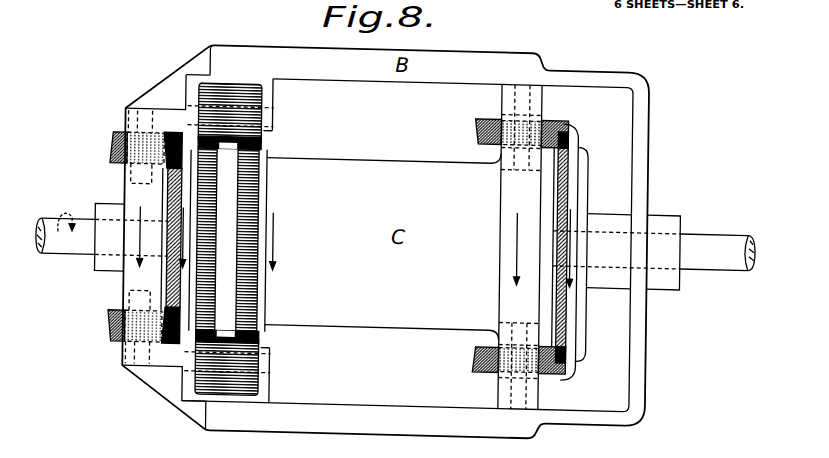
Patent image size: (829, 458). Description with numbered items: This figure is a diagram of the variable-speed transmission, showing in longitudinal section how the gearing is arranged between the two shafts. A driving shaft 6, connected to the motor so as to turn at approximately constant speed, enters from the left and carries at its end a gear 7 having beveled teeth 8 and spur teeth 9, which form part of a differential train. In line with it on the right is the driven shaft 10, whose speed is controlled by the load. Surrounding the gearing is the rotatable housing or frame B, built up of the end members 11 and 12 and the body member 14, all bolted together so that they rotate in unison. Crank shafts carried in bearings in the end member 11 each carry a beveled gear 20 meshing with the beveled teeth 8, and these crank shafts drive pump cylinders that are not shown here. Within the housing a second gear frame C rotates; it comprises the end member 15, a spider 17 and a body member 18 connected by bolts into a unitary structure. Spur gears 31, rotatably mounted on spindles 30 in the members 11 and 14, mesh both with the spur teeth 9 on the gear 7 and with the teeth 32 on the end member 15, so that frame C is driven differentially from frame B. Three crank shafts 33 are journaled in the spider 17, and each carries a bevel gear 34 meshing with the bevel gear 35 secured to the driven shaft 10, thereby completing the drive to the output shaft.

The driving shaft 6 is at (38, 243).
The gear 7 is at (185, 350).
The beveled teeth 8 is at (168, 279).
The spur teeth 9 is at (202, 148).
The driven shaft 10 is at (654, 251).
The end member 11 is at (125, 191).
The end member 12 is at (649, 146).
The body member 14 is at (372, 84).
The end member 15 is at (266, 303).
The spider 17 is at (499, 221).
The body member 18 is at (390, 330).
The beveled gear 20 is at (111, 159).
The spindle 30 is at (279, 115).
The spur gear 31 is at (248, 92).
The teeth 32 is at (267, 164).
The crank shaft 33 is at (499, 391).
The bevel gear 34 is at (474, 130).
The bevel gear 35 is at (568, 188).